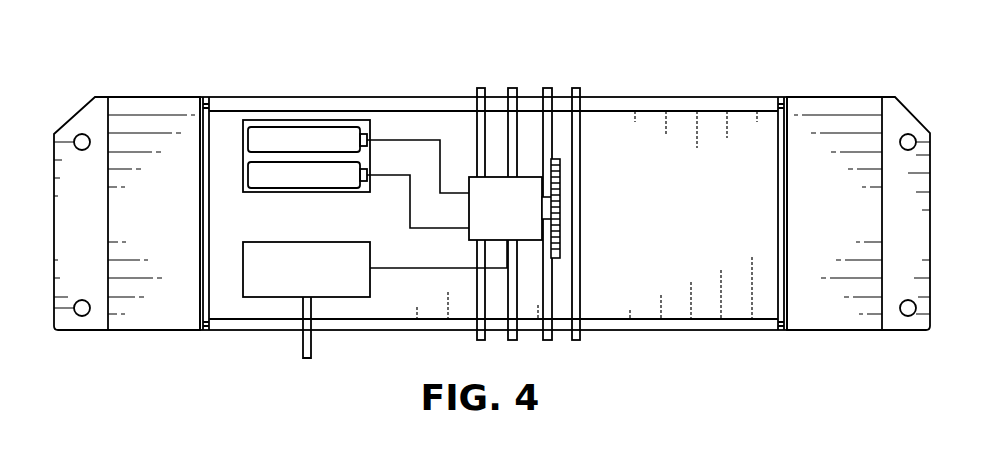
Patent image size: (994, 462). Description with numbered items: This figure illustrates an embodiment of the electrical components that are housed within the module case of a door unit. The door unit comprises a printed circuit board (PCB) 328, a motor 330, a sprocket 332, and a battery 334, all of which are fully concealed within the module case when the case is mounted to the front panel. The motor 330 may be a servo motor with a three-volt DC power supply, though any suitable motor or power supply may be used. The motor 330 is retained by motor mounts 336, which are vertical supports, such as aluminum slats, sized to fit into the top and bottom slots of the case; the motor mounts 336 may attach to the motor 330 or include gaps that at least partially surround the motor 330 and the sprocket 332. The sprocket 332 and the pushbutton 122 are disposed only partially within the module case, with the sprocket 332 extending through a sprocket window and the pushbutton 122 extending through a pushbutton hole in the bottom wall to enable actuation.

The pushbutton 122 is at (302, 343).
The printed circuit board 328 is at (313, 242).
The motor 330 is at (498, 177).
The sprocket 332 is at (560, 213).
The battery 334 is at (287, 140).
The motor mounts 336 is at (545, 340).